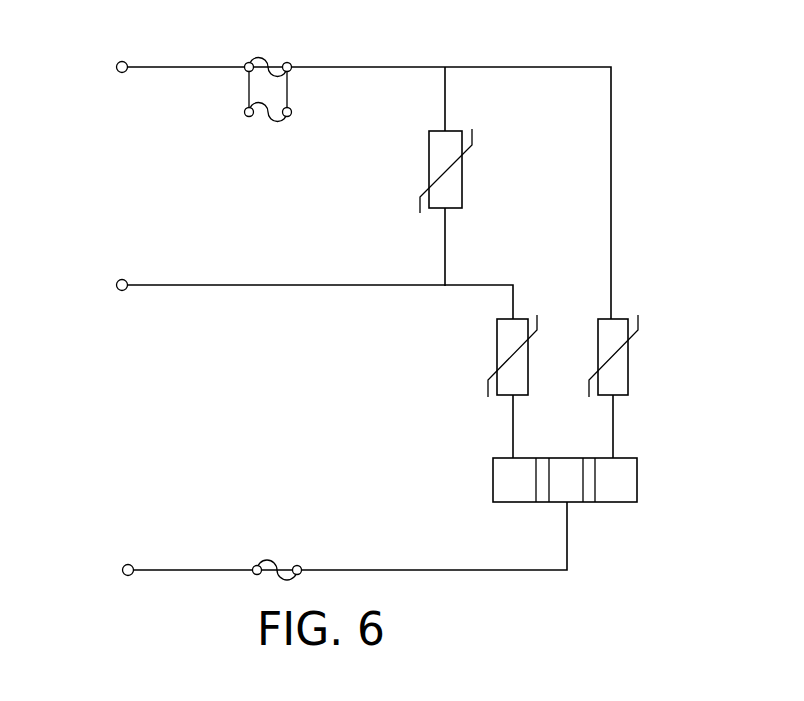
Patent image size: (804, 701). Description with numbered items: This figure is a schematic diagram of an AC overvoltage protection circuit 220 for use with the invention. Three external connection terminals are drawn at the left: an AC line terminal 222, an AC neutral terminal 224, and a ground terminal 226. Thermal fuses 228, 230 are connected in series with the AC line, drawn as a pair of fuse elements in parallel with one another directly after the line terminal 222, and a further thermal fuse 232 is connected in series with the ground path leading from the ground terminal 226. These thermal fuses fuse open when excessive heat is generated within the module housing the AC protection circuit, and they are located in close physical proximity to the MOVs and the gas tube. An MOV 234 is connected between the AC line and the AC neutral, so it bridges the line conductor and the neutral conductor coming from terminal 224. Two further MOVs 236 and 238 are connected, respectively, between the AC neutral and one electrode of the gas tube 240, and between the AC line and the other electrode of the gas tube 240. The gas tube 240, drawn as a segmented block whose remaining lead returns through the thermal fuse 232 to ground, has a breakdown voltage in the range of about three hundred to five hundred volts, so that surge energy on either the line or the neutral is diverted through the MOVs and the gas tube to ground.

The AC overvoltage protection circuit 220 is at (632, 72).
The line terminal 222 is at (117, 62).
The neutral terminal 224 is at (117, 279).
The ground terminal 226 is at (123, 565).
The thermal fuse 228 is at (270, 62).
The thermal fuse 230 is at (267, 117).
The thermal fuse 232 is at (275, 563).
The MOV 234 is at (463, 173).
The MOV 236 is at (497, 337).
The MOV 238 is at (630, 360).
The gas tube 240 is at (637, 487).